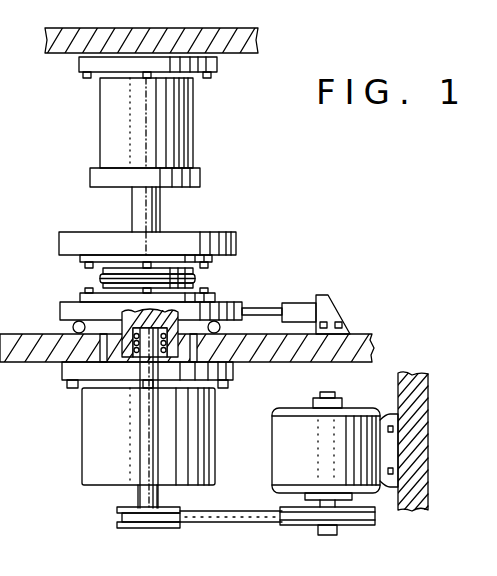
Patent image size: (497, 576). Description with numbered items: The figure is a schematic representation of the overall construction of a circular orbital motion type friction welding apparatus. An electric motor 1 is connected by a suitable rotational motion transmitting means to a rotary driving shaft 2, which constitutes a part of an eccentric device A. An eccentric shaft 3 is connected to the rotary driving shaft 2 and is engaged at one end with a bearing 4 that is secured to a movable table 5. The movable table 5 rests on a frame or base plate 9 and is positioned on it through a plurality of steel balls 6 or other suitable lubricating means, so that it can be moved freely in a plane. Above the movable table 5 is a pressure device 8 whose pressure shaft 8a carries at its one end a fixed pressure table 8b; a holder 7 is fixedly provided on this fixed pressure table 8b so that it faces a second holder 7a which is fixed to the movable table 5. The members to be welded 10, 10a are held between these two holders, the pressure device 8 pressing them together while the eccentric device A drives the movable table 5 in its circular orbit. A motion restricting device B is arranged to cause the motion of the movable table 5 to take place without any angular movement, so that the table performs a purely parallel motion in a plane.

The electric motor 1 is at (360, 417).
The rotary driving shaft 2 is at (137, 502).
The eccentric shaft 3 is at (168, 362).
The bearing 4 is at (123, 362).
The movable table 5 is at (60, 310).
The steel balls 6 is at (73, 327).
The holder 7 is at (212, 259).
The holder 7a is at (220, 298).
The pressure device 8 is at (183, 124).
The pressure shaft 8a is at (157, 210).
The fixed pressure table 8b is at (237, 242).
The frame or base plate 9 is at (358, 334).
The member to be welded 10 is at (87, 270).
The member to be welded 10a is at (100, 280).
The eccentric device A is at (82, 446).
The motion restricting device B is at (296, 303).